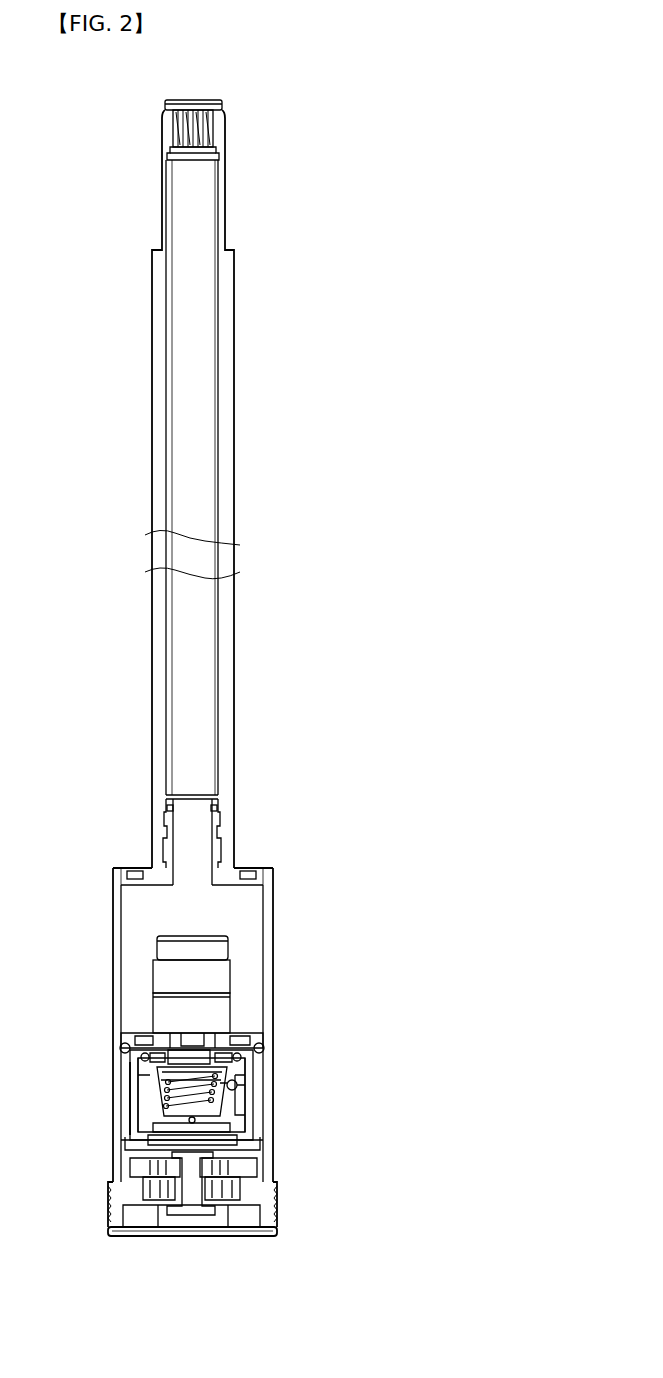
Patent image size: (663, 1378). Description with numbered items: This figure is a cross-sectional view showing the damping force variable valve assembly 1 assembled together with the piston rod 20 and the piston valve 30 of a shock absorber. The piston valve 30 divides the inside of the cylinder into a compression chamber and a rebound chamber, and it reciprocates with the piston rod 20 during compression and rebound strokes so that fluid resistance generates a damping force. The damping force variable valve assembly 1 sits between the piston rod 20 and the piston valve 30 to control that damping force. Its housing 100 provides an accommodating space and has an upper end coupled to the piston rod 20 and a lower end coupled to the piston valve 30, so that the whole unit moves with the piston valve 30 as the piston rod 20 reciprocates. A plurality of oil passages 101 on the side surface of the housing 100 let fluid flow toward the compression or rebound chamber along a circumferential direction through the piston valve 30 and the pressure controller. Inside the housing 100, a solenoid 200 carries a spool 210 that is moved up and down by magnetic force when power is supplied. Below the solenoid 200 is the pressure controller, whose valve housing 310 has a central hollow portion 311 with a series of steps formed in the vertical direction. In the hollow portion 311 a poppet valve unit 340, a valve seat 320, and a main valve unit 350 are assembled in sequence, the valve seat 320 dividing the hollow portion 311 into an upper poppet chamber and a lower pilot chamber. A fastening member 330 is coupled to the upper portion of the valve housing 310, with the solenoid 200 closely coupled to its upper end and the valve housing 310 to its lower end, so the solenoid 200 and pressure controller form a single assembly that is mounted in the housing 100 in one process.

The damping force variable valve assembly 1 is at (405, 976).
The piston rod 20 is at (232, 687).
The piston valve 30 is at (240, 1238).
The housing 100 is at (265, 901).
The oil passages 101 is at (268, 1162).
The solenoid 200 is at (216, 975).
The spool 210 is at (195, 1048).
The valve housing 310 is at (240, 1092).
The hollow portion 311 is at (236, 1127).
The valve seat 320 is at (168, 1086).
The fastening member 330 is at (254, 1068).
The poppet valve unit 340 is at (152, 1063).
The main valve unit 350 is at (150, 1114).